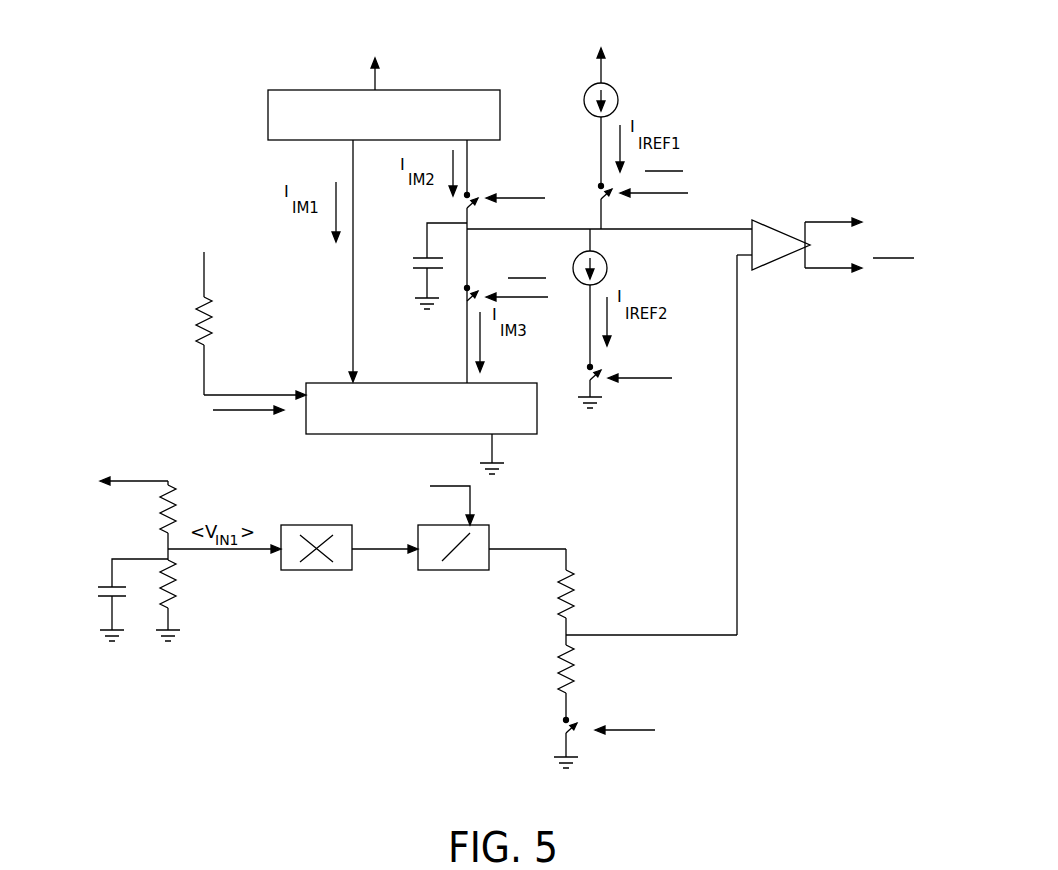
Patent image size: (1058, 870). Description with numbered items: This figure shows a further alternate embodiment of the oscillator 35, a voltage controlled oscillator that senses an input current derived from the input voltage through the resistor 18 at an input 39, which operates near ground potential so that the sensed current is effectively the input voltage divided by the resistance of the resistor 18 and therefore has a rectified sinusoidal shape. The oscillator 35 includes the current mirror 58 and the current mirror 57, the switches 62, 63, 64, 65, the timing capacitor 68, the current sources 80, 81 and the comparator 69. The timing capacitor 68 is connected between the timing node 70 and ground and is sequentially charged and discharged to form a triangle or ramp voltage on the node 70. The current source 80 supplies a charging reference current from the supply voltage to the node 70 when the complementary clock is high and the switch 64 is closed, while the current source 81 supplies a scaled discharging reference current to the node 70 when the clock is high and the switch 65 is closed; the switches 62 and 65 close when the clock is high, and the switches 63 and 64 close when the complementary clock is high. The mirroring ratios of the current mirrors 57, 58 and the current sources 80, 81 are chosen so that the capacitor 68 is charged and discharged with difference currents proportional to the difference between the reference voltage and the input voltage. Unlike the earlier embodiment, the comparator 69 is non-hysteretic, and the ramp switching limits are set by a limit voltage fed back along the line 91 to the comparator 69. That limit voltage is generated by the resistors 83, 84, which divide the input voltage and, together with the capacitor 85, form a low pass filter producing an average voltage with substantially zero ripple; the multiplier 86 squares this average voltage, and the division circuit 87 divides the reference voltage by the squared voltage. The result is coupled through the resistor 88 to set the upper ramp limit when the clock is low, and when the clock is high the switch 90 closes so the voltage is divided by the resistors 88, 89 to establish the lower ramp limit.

The oscillator 35 is at (785, 120).
The current mirror 58 is at (292, 88).
The current mirror 57 is at (324, 436).
The switch 62 is at (462, 199).
The switch 63 is at (462, 300).
The switch 64 is at (596, 193).
The switch 65 is at (585, 374).
The timing capacitor 68 is at (408, 290).
The comparator 69 is at (778, 220).
The timing node 70 is at (668, 232).
The current source 80 is at (586, 93).
The current source 81 is at (607, 270).
The feedback line 91 is at (738, 298).
The resistor 18 is at (200, 309).
The input 39 is at (264, 393).
The resistor 83 is at (160, 518).
The resistor 84 is at (180, 584).
The capacitor 85 is at (97, 592).
The multiplier 86 is at (333, 572).
The division circuit 87 is at (456, 572).
The resistor 88 is at (577, 584).
The resistor 89 is at (578, 662).
The switch 90 is at (558, 731).